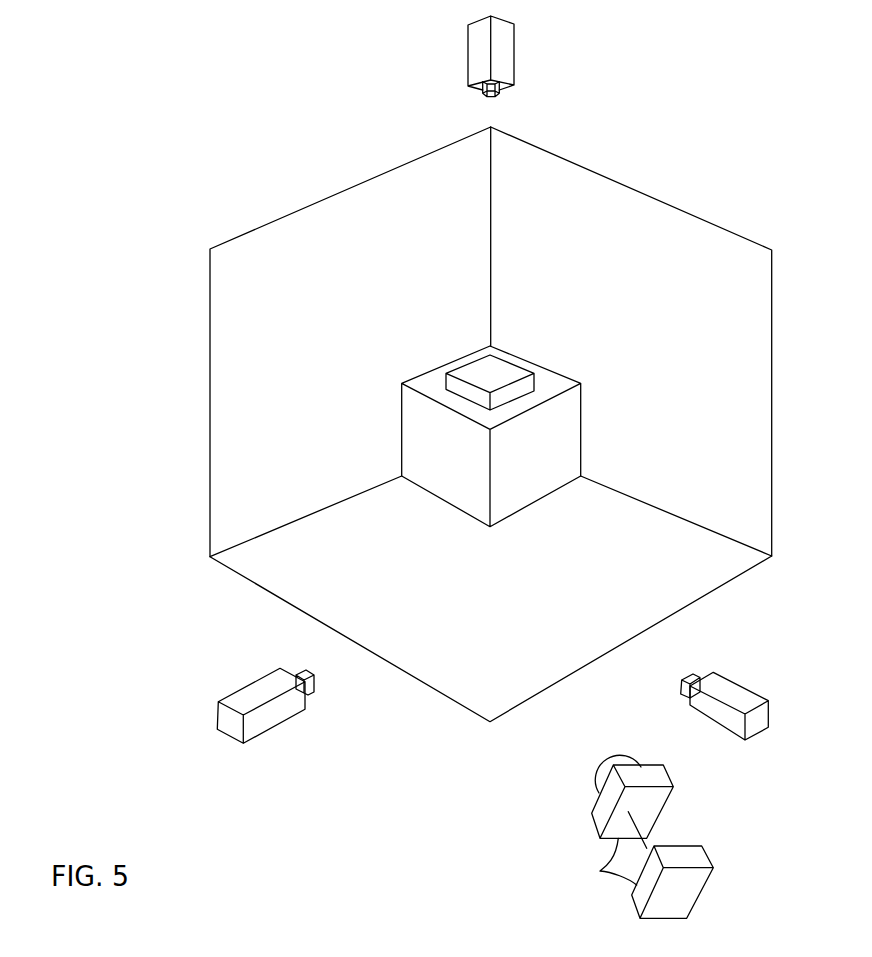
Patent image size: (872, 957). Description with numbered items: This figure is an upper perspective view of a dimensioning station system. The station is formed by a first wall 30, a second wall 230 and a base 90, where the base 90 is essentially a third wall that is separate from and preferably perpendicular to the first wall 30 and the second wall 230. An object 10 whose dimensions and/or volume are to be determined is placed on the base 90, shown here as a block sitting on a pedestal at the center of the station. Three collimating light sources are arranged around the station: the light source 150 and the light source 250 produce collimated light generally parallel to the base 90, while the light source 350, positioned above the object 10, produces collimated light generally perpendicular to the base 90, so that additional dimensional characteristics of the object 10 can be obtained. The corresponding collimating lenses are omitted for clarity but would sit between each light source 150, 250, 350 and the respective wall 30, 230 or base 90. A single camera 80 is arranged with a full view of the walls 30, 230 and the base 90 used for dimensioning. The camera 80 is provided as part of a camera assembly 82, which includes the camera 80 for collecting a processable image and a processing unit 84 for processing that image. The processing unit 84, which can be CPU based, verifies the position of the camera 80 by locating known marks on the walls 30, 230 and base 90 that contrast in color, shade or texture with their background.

The light source 350 is at (514, 54).
The first wall 30 is at (772, 277).
The second wall 230 is at (209, 363).
The base 90 is at (755, 566).
The object 10 is at (550, 369).
The light source 150 is at (277, 725).
The light source 250 is at (740, 685).
The camera 80 is at (600, 808).
The camera assembly 82 is at (600, 871).
The processing unit 84 is at (673, 882).